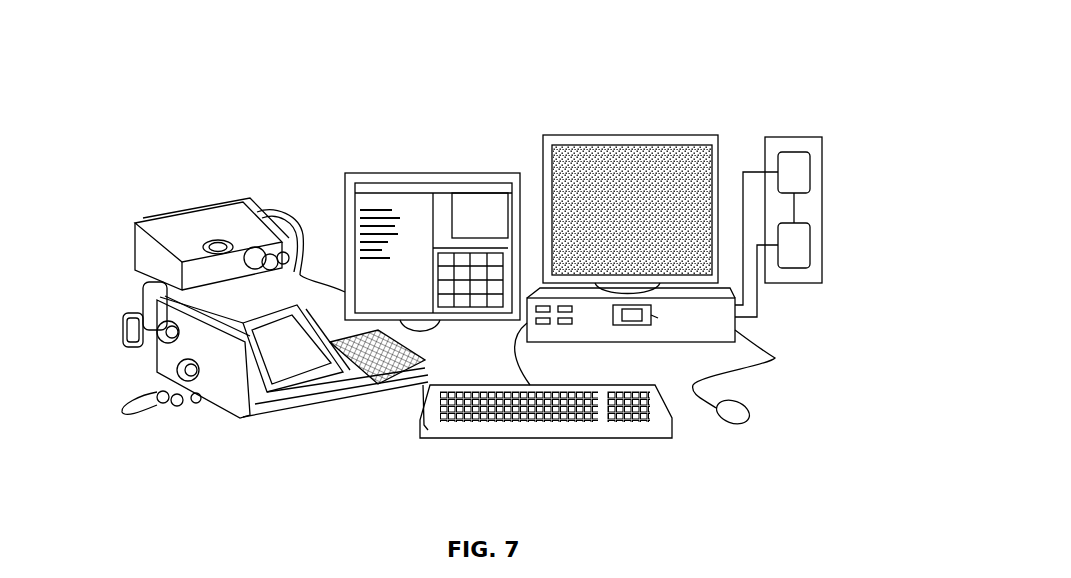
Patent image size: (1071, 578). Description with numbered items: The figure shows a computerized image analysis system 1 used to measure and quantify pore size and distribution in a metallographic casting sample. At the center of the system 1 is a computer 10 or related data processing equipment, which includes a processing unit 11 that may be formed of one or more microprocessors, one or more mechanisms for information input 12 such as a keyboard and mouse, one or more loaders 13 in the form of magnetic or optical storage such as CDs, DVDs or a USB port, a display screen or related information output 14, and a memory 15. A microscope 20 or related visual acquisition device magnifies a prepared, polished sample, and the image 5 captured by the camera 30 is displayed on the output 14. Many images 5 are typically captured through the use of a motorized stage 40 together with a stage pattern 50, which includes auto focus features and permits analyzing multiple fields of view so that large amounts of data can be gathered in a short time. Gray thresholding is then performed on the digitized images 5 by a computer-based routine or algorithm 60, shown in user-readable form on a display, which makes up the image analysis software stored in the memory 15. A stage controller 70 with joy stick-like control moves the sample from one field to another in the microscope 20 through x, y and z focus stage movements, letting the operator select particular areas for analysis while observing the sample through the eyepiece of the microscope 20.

The system 1 is at (313, 95).
The image 5 is at (627, 158).
The computer 10 is at (566, 128).
The processing unit 11 is at (631, 315).
The information input 12 is at (660, 446).
The loader 13 is at (560, 322).
The information output 14 is at (674, 135).
The memory 15 is at (796, 136).
The microscope 20 is at (295, 415).
The camera 30 is at (121, 307).
The motorized stage 40 is at (186, 212).
The stage pattern 50 is at (468, 248).
The computer-based routine or algorithm 60 is at (388, 208).
The stage controller 70 is at (370, 403).